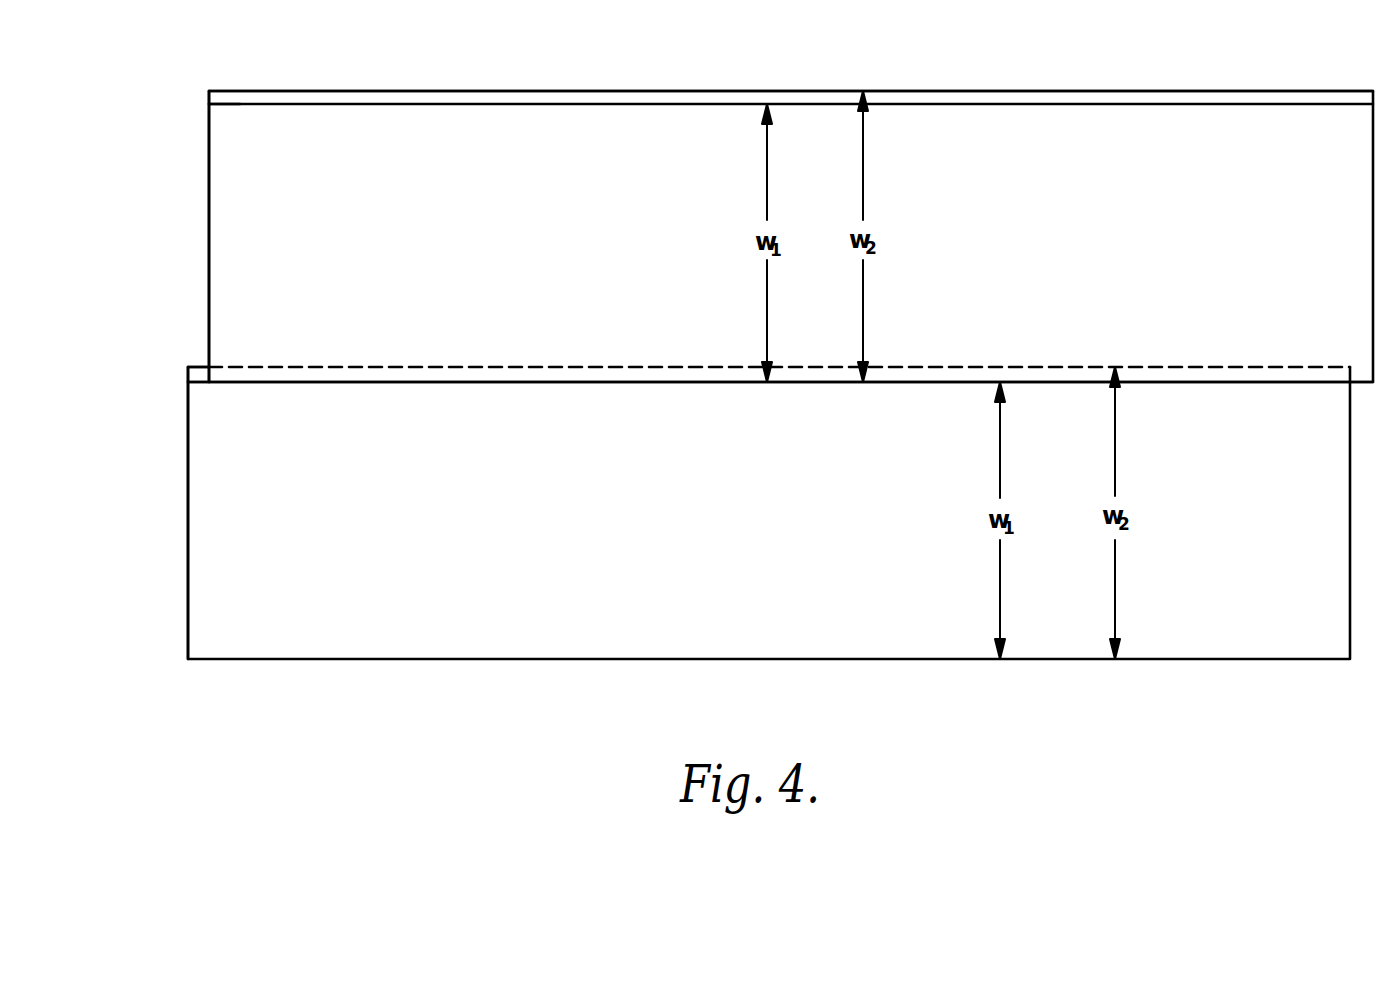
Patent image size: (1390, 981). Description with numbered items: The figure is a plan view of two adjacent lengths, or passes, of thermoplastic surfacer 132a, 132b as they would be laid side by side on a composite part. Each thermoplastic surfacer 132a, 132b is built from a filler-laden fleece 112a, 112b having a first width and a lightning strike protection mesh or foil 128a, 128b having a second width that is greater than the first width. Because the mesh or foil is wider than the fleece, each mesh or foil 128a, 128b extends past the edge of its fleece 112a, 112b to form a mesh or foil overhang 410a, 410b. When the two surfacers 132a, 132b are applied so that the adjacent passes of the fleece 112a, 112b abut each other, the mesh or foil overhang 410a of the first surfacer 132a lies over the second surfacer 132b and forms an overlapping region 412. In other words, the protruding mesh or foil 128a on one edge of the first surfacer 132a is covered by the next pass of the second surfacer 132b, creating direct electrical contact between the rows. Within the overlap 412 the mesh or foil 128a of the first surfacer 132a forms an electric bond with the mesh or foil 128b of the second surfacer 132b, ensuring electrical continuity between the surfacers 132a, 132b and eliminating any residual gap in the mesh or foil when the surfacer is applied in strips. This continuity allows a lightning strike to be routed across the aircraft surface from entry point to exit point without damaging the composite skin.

The filler-laden fleece 112a is at (470, 640).
The filler-laden fleece 112b is at (494, 143).
The lightning strike protection mesh or foil 128a is at (197, 375).
The lightning strike protection mesh or foil 128b is at (266, 94).
The thermoplastic surfacer 132a is at (188, 563).
The thermoplastic surfacer 132b is at (208, 195).
The mesh or foil overhang 410a is at (205, 367).
The mesh or foil overhang 410b is at (218, 98).
The overlapping region 412 is at (453, 375).